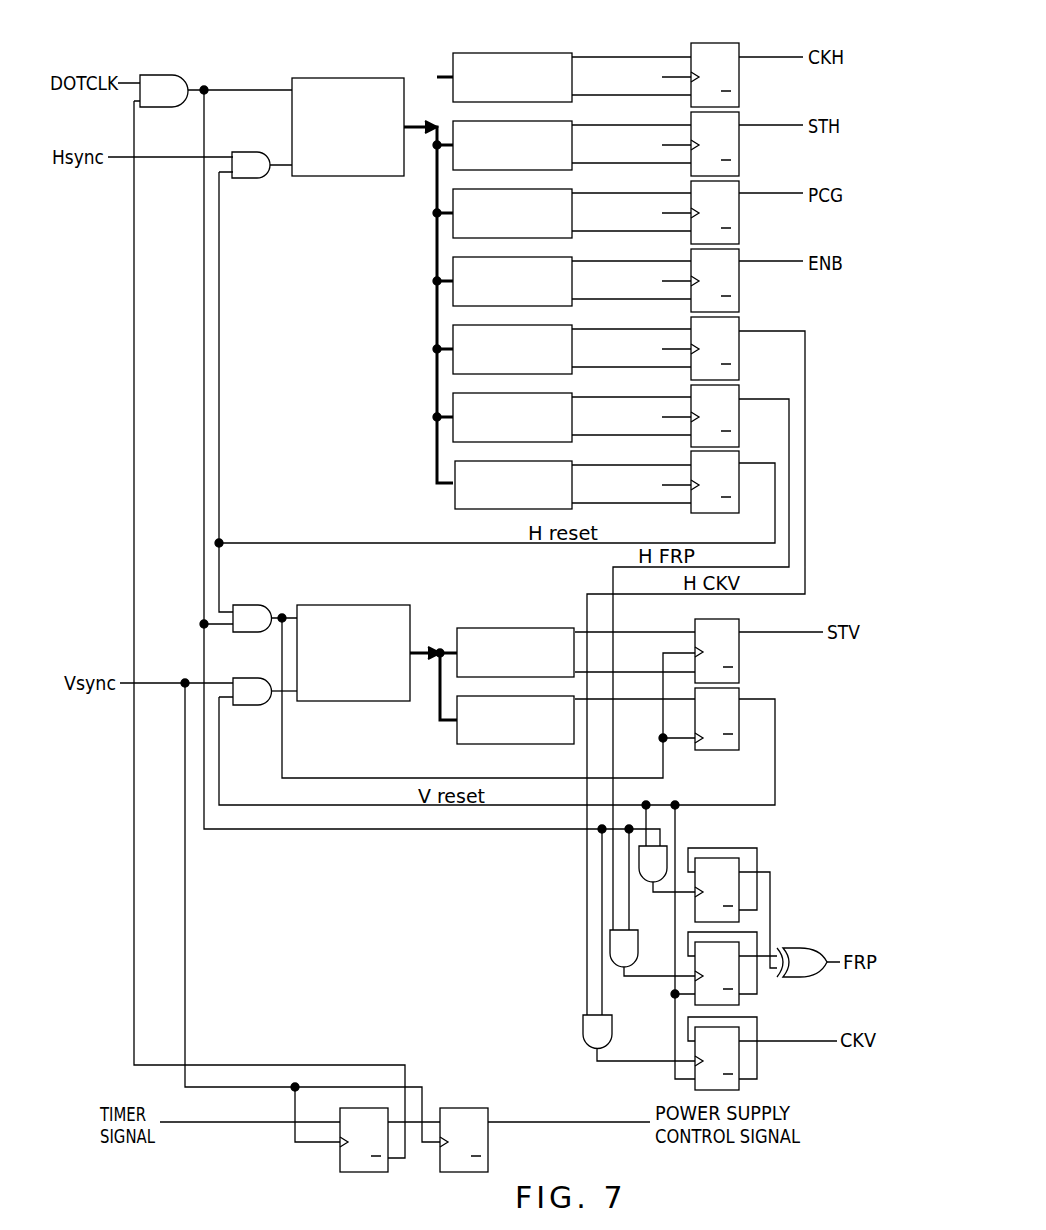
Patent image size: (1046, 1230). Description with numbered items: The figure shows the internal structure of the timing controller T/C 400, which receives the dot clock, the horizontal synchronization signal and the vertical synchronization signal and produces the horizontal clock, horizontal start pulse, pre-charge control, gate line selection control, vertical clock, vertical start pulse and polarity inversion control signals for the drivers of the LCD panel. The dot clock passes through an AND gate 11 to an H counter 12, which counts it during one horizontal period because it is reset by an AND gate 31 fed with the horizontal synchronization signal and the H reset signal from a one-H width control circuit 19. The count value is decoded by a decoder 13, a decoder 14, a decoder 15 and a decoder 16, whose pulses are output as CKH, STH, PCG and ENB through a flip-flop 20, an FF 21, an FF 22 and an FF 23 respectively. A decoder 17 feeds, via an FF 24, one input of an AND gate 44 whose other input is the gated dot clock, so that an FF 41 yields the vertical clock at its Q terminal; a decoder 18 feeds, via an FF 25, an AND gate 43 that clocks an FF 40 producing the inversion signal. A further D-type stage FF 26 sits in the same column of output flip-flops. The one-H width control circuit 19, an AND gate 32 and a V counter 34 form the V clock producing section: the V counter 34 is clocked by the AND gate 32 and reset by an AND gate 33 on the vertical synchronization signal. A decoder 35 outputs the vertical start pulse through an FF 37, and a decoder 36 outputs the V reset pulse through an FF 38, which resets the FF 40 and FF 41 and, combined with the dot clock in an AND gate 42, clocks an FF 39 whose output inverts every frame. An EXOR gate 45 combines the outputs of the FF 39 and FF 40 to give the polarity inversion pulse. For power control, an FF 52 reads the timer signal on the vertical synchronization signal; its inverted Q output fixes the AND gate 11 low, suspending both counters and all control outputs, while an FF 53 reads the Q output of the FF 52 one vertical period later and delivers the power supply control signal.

The T/C 400 is at (714, 32).
The AND gate 11 is at (155, 75).
The H counter 12 is at (332, 78).
The decoder 13 is at (576, 57).
The decoder 14 is at (576, 125).
The decoder 15 is at (576, 193).
The decoder 16 is at (576, 261).
The decoder 17 is at (576, 329).
The decoder 18 is at (576, 397).
The 1H width control circuit 19 is at (576, 465).
The flip-flop 20 is at (715, 75).
The FF 21 is at (715, 144).
The FF 22 is at (715, 212).
The FF 23 is at (715, 280).
The FF 24 is at (715, 348).
The FF 25 is at (715, 416).
The D flip-flop 26 is at (715, 482).
The AND gate 31 is at (251, 165).
The AND gate 32 is at (252, 618).
The AND gate 33 is at (252, 691).
The V counter 34 is at (337, 605).
The decoder 35 is at (500, 628).
The decoder 36 is at (457, 741).
The FF 37 is at (717, 651).
The FF 38 is at (717, 719).
The FF 39 is at (717, 890).
The FF 40 is at (717, 973).
The FF 41 is at (717, 1058).
The AND gate 42 is at (667, 869).
The AND gate 43 is at (652, 953).
The AND gate 44 is at (639, 1038).
The EXOR gate 45 is at (802, 962).
The FF 52 is at (364, 1140).
The FF 53 is at (464, 1140).